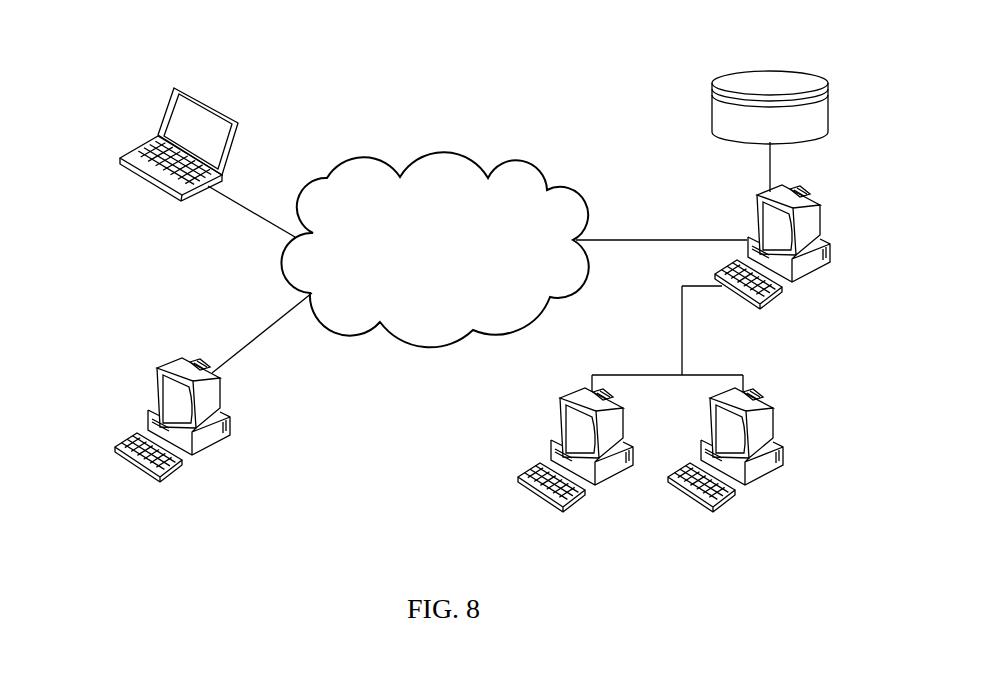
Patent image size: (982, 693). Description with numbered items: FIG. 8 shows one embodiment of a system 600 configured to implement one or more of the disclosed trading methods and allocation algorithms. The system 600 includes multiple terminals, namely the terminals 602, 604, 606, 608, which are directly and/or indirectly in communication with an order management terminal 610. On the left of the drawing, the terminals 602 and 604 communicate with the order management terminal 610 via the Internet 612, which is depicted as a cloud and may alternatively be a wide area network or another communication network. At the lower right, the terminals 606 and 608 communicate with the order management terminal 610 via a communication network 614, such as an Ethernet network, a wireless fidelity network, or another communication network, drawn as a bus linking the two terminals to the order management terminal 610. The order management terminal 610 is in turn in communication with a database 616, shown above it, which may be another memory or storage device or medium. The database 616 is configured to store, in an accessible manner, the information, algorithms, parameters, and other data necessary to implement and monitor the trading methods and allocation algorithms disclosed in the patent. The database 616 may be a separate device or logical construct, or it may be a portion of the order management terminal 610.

The system 600 is at (445, 65).
The terminal 602 is at (145, 140).
The terminal 604 is at (165, 360).
The terminal 606 is at (540, 500).
The terminal 608 is at (682, 498).
The order management terminal 610 is at (750, 237).
The Internet 612 is at (460, 286).
The communication network 614 is at (655, 372).
The database 616 is at (708, 103).